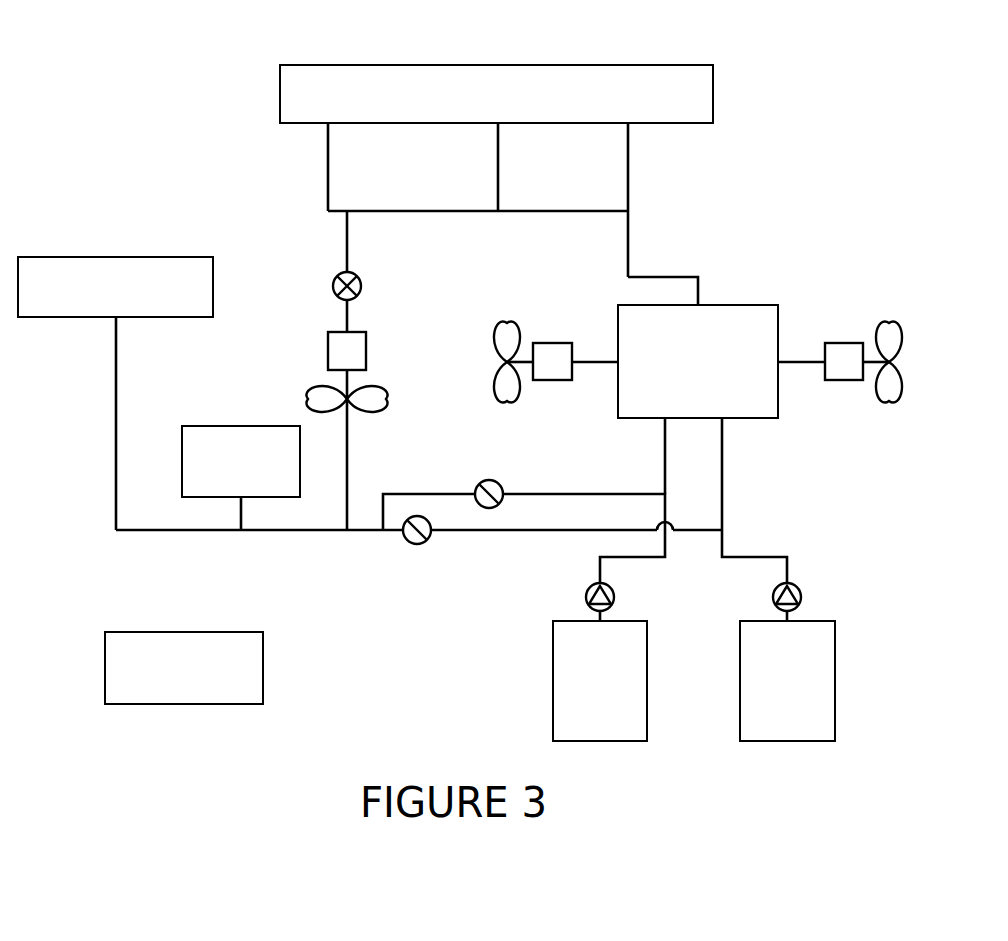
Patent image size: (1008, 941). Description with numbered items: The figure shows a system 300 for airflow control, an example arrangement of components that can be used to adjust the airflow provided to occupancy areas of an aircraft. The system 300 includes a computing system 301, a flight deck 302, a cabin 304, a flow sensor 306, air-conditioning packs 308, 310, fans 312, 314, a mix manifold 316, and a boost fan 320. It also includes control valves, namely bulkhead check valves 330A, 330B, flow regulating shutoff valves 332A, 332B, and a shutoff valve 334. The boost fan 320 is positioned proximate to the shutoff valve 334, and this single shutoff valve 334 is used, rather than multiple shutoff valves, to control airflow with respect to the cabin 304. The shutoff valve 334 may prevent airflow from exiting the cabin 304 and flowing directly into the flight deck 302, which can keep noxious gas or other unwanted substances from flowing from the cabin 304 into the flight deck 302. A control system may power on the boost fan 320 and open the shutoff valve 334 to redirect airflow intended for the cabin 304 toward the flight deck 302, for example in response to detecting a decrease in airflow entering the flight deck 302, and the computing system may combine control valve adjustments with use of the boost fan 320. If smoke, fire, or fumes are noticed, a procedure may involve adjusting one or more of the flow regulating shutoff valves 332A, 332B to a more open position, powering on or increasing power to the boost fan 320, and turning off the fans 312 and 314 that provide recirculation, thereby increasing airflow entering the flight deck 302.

The system 300 is at (150, 128).
The computing system 301 is at (195, 630).
The flight deck 302 is at (135, 255).
The cabin 304 is at (600, 65).
The flow sensor 306 is at (206, 425).
The air-conditioning pack 308 is at (553, 668).
The air-conditioning pack 310 is at (835, 672).
The fan 312 is at (558, 343).
The fan 314 is at (838, 343).
The mix manifold 316 is at (737, 305).
The boost fan 320 is at (366, 348).
The bulkhead check valve 330A is at (588, 592).
The bulkhead check valve 330B is at (802, 592).
The flow regulating shutoff valve 332A is at (492, 480).
The flow regulating shutoff valve 332B is at (415, 546).
The shutoff valve 334 is at (332, 284).